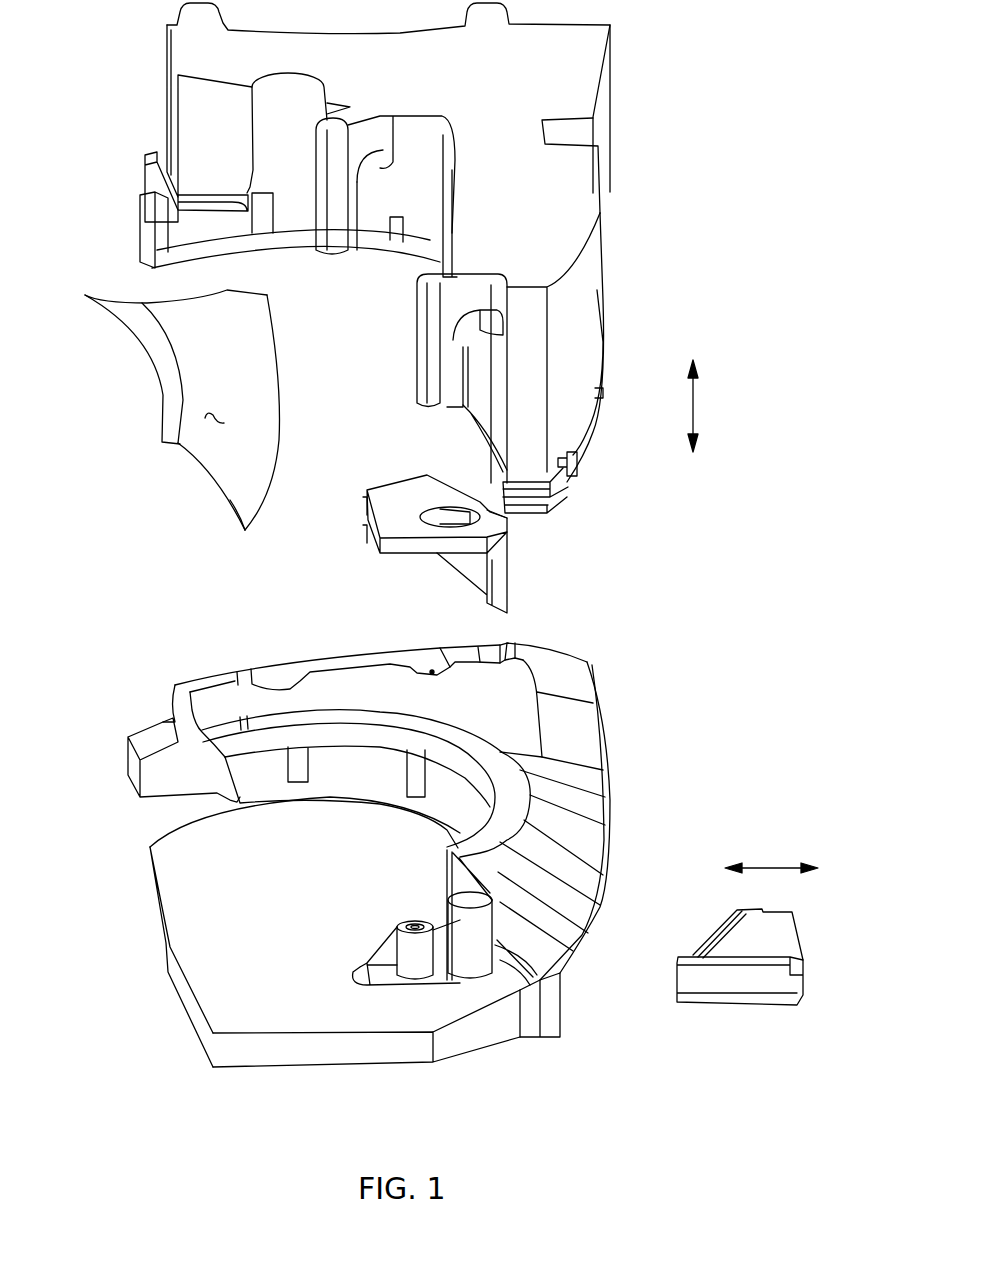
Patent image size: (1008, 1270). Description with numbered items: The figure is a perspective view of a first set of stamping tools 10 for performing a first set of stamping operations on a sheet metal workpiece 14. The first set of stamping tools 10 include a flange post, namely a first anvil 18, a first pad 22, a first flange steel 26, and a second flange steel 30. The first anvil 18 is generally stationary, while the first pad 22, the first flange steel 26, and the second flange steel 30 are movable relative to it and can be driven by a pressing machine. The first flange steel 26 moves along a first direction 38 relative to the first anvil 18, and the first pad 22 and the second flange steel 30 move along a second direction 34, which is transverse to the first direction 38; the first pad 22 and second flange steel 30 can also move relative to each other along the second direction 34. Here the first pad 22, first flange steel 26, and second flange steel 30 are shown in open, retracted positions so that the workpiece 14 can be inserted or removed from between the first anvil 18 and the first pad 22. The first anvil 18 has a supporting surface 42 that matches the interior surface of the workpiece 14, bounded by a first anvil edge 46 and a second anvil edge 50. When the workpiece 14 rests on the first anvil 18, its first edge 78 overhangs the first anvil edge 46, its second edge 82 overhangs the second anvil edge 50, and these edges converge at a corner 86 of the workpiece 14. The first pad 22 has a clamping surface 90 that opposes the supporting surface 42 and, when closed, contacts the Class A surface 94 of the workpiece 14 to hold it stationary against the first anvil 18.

The first set of stamping tools 10 is at (750, 303).
The sheet metal workpiece 14 is at (208, 441).
The first anvil 18 is at (577, 673).
The first pad 22 is at (600, 318).
The first flange steel 26 is at (773, 940).
The second flange steel 30 is at (400, 493).
The second direction 34 is at (693, 400).
The first direction 38 is at (760, 868).
The supporting surface 42 is at (583, 747).
The first anvil edge 46 is at (610, 850).
The second anvil edge 50 is at (537, 950).
The first edge 78 is at (270, 377).
The second edge 82 is at (215, 473).
The corner 86 is at (247, 530).
The clamping surface 90 is at (473, 437).
The Class A surface 94 is at (207, 417).